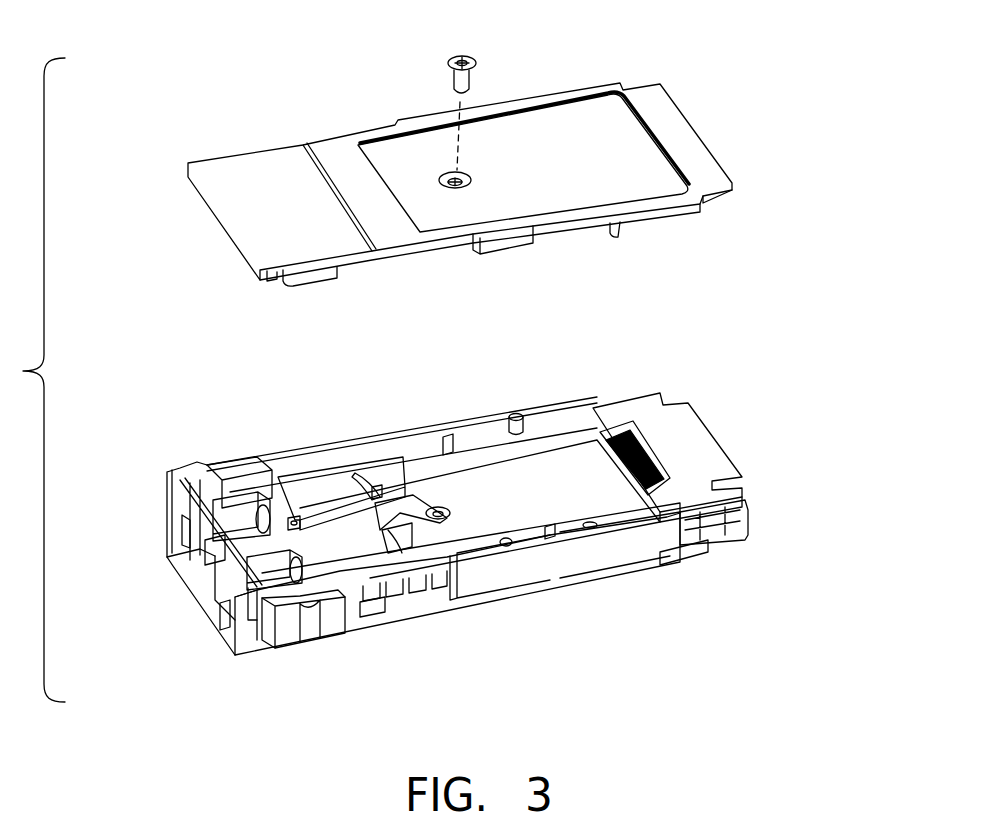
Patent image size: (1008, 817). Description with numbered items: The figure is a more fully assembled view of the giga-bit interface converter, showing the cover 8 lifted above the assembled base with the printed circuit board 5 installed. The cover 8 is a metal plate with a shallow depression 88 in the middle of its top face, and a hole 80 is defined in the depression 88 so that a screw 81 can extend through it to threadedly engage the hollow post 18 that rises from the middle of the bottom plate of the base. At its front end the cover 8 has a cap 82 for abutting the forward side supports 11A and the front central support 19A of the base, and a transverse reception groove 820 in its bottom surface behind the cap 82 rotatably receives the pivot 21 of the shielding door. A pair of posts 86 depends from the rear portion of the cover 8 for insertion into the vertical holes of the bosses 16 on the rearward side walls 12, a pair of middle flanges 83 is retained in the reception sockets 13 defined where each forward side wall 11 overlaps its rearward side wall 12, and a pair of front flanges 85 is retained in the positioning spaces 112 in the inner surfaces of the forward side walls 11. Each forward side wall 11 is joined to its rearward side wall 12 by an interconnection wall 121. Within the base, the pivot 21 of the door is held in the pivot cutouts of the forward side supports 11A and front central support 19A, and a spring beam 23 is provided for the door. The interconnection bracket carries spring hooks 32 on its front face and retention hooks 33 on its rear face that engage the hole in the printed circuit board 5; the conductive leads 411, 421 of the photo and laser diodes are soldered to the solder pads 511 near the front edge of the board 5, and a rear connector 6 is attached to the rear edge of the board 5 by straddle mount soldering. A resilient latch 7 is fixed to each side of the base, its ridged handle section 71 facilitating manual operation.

The cover 8 is at (451, 189).
The screw 81 is at (473, 60).
The shallow depression 88 is at (600, 153).
The hole 80 is at (471, 181).
The cap 82 is at (230, 237).
The front flange 85 is at (320, 277).
The transverse reception groove 820 is at (272, 275).
The middle flange 83 is at (487, 247).
The post 86 is at (617, 236).
The rear connector 6 is at (442, 547).
The positioning space 112 is at (220, 487).
The forward side support 11A is at (182, 522).
The pivot 21 is at (197, 525).
The spring beam 23 is at (247, 547).
The front central support 19A is at (217, 580).
The spring hook 32 is at (253, 627).
The forward side wall 11 is at (248, 630).
The handle section 71 is at (320, 615).
The resilient latch 7 is at (375, 607).
The conductive leads 411 is at (377, 510).
The solder pads 511 is at (378, 492).
The conductive leads 421 is at (403, 537).
The interconnection wall 121 is at (480, 420).
The boss 16 is at (522, 428).
The hollow post 18 is at (440, 509).
The retention hooks 33 is at (417, 527).
The reception socket 13 is at (507, 546).
The rearward side wall 12 is at (598, 553).
The printed circuit board 5 is at (612, 495).